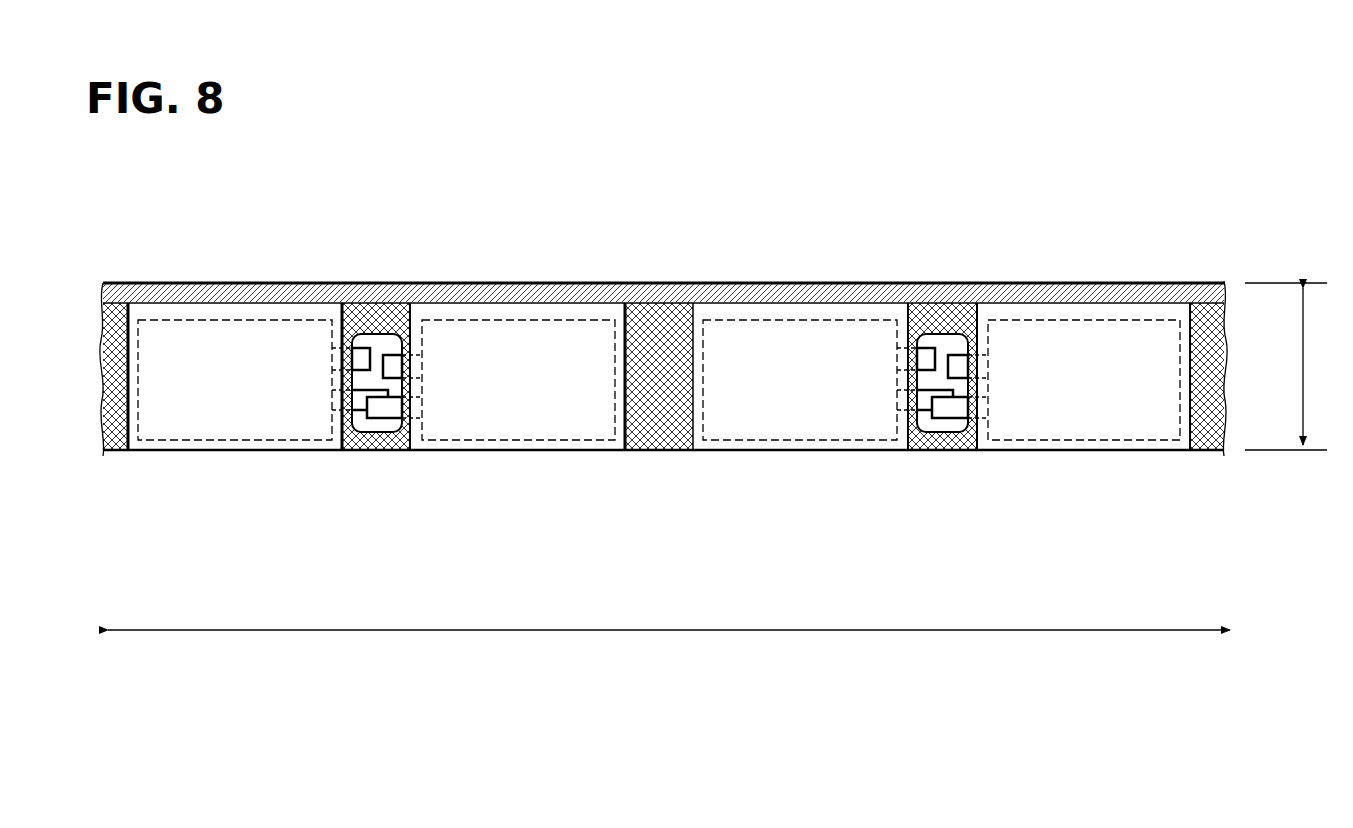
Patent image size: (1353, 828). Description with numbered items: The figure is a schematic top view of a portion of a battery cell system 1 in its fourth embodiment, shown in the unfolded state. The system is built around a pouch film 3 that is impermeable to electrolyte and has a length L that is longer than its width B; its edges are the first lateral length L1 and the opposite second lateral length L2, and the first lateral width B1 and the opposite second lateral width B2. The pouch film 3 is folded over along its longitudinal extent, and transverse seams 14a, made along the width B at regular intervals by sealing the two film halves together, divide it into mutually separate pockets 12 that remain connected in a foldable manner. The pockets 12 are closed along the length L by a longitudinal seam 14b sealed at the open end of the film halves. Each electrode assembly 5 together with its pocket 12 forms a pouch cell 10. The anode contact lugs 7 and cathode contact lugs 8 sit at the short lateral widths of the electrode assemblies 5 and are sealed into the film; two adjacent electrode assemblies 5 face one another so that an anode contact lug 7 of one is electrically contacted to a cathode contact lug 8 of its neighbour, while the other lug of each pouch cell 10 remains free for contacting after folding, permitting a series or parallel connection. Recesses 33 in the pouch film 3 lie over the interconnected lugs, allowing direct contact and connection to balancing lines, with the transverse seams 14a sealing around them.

The battery cell system 1 is at (1142, 226).
The pouch film 3 is at (602, 300).
The electrode assembly 5 is at (248, 343).
The anode contact lug 7 is at (358, 345).
The cathode contact lug 8 is at (393, 365).
The pouch cell 10 is at (826, 456).
The pocket 12 is at (522, 414).
The transverse seam 14a is at (657, 320).
The longitudinal seam 14b is at (178, 300).
The recess 33 is at (385, 432).
The width B is at (1286, 366).
The first lateral width B1 is at (1223, 363).
The second lateral width B2 is at (103, 338).
The length L is at (669, 650).
The first lateral length L1 is at (317, 300).
The second lateral length L2 is at (258, 453).